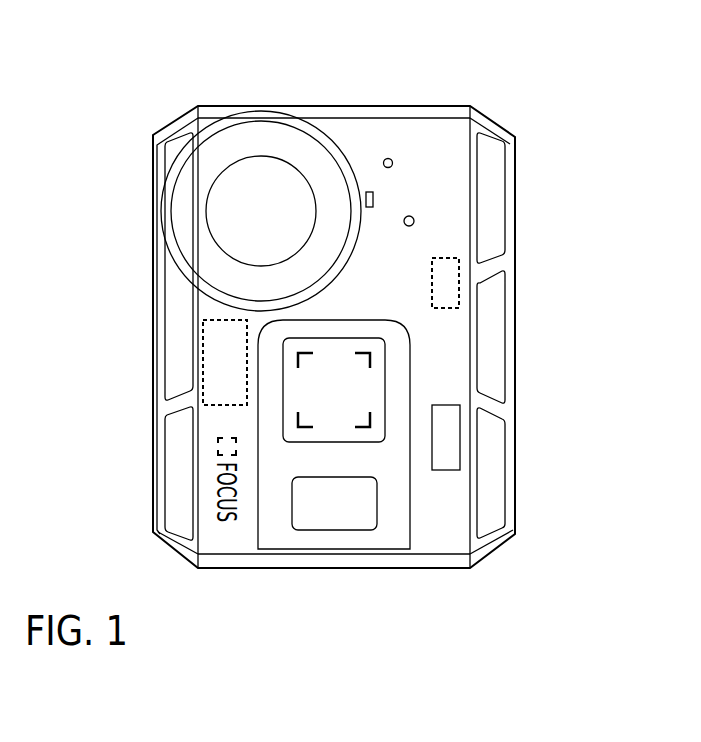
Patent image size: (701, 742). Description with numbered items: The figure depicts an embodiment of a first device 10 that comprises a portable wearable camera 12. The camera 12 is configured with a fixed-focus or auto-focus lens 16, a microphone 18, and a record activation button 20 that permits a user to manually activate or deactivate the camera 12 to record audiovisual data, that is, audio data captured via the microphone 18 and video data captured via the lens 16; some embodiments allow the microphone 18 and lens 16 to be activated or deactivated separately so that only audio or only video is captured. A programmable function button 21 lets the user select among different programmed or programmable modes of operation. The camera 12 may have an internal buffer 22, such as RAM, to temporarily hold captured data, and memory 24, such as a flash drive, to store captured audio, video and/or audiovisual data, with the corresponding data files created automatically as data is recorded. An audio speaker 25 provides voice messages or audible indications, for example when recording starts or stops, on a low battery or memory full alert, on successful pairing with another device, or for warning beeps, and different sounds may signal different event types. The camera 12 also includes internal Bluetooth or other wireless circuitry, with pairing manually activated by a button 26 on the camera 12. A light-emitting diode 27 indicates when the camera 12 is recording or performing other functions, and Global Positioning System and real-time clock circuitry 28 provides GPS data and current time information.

The first device 10 is at (458, 60).
The portable wearable camera 12 is at (340, 106).
The lens 16 is at (253, 208).
The microphone 18 is at (395, 163).
The record activation button 20 is at (385, 383).
The programmable function button 21 is at (330, 530).
The internal buffer 22 is at (459, 285).
The memory 24 is at (203, 360).
The audio speaker 25 is at (415, 221).
The button 26 is at (153, 208).
The light-emitting diode (LED) 27 is at (374, 199).
The Global Positioning System and real-time clock circuitry 28 is at (460, 435).